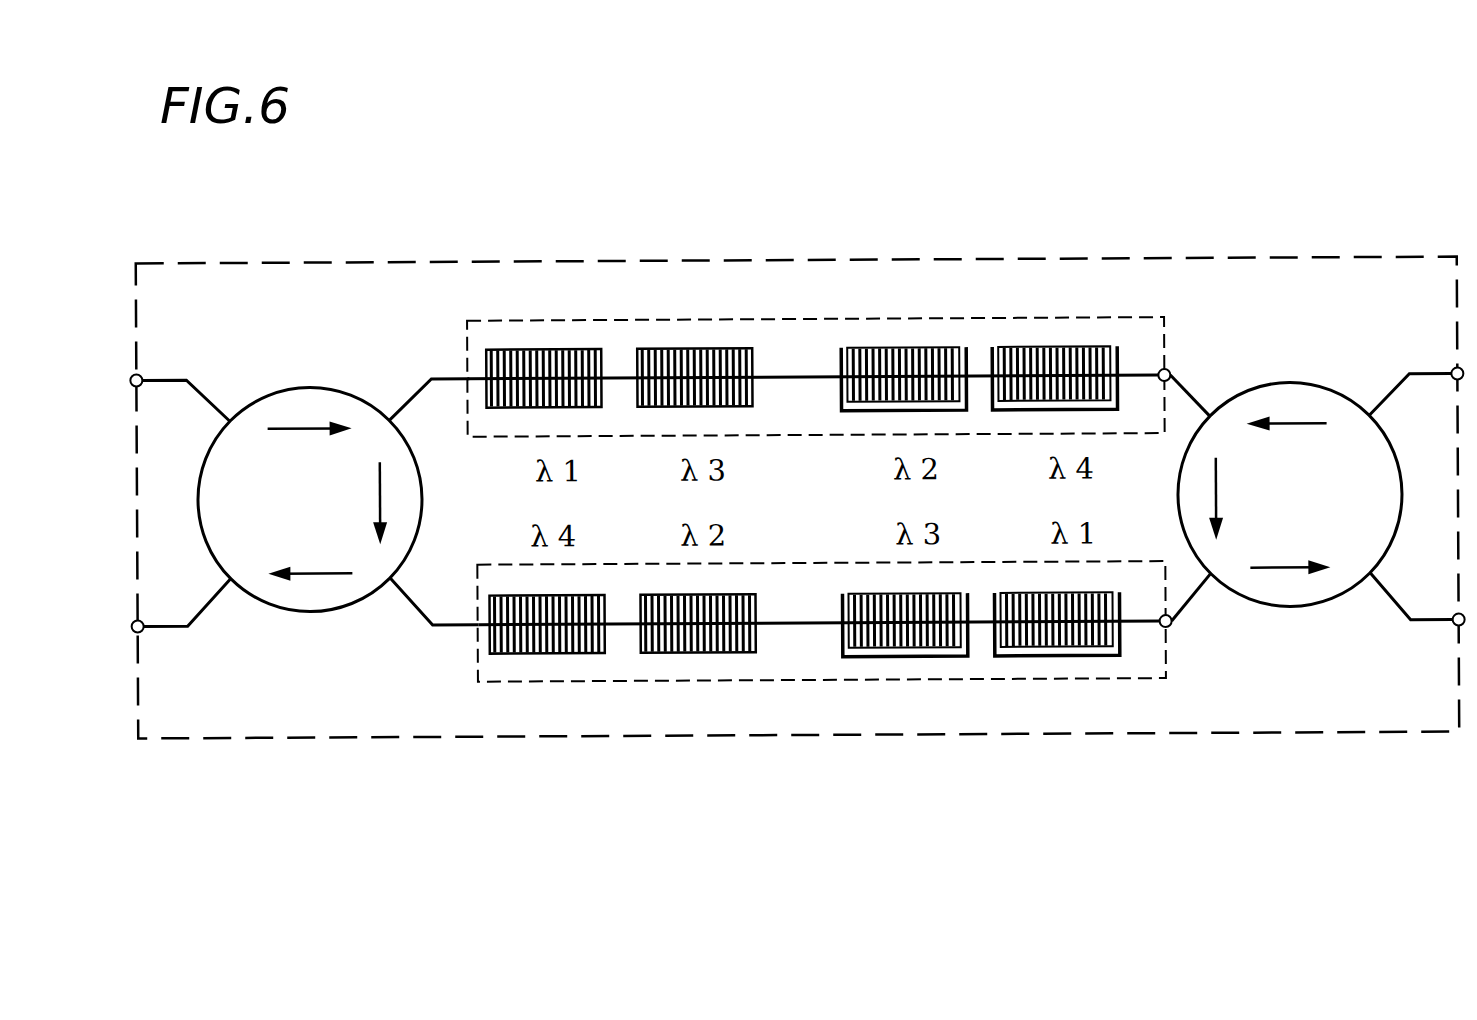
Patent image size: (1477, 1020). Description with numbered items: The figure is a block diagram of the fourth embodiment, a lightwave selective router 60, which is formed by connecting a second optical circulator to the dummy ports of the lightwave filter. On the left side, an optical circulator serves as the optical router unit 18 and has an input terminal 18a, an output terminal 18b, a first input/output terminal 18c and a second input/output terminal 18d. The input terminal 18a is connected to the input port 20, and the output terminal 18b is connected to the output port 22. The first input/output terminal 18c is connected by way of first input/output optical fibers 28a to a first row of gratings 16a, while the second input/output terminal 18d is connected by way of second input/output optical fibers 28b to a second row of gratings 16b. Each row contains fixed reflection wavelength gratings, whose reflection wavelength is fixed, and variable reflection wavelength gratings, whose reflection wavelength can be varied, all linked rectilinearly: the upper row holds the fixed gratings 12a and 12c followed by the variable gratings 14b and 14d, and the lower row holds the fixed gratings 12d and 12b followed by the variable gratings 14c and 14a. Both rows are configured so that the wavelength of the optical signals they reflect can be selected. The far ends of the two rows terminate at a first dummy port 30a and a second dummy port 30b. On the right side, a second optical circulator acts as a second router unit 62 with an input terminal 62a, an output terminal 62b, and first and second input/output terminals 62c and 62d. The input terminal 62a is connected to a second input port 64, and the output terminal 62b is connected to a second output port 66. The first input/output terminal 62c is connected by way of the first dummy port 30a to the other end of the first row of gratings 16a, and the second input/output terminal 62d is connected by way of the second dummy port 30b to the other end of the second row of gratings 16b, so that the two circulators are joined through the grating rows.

The fixed reflection wavelength grating 12a is at (540, 348).
The fixed reflection wavelength grating 12b is at (690, 652).
The fixed reflection wavelength grating 12c is at (690, 348).
The fixed reflection wavelength grating 12d is at (540, 652).
The variable reflection wavelength grating 14a is at (1045, 657).
The variable reflection wavelength grating 14b is at (900, 348).
The variable reflection wavelength grating 14c is at (900, 657).
The variable reflection wavelength grating 14d is at (1045, 348).
The first row of gratings 16a is at (808, 319).
The second row of gratings 16b is at (808, 680).
The optical router unit 18 is at (310, 385).
The input terminal 18a is at (228, 414).
The output terminal 18b is at (230, 582).
The first input/output terminal 18c is at (388, 414).
The second input/output terminal 18d is at (388, 582).
The input port 20 is at (141, 370).
The output port 22 is at (141, 632).
The first input/output optical fibers 28a is at (446, 374).
The second input/output optical fibers 28b is at (447, 627).
The first dummy port 30a is at (1167, 370).
The second dummy port 30b is at (1168, 630).
The lightwave selective router 60 is at (1398, 260).
The second router unit 62 is at (1290, 385).
The input terminal 62a is at (1368, 412).
The output terminal 62b is at (1368, 582).
The first input/output terminal 62c is at (1208, 412).
The second input/output terminal 62d is at (1210, 582).
The second input port 64 is at (1456, 370).
The second output port 66 is at (1457, 632).